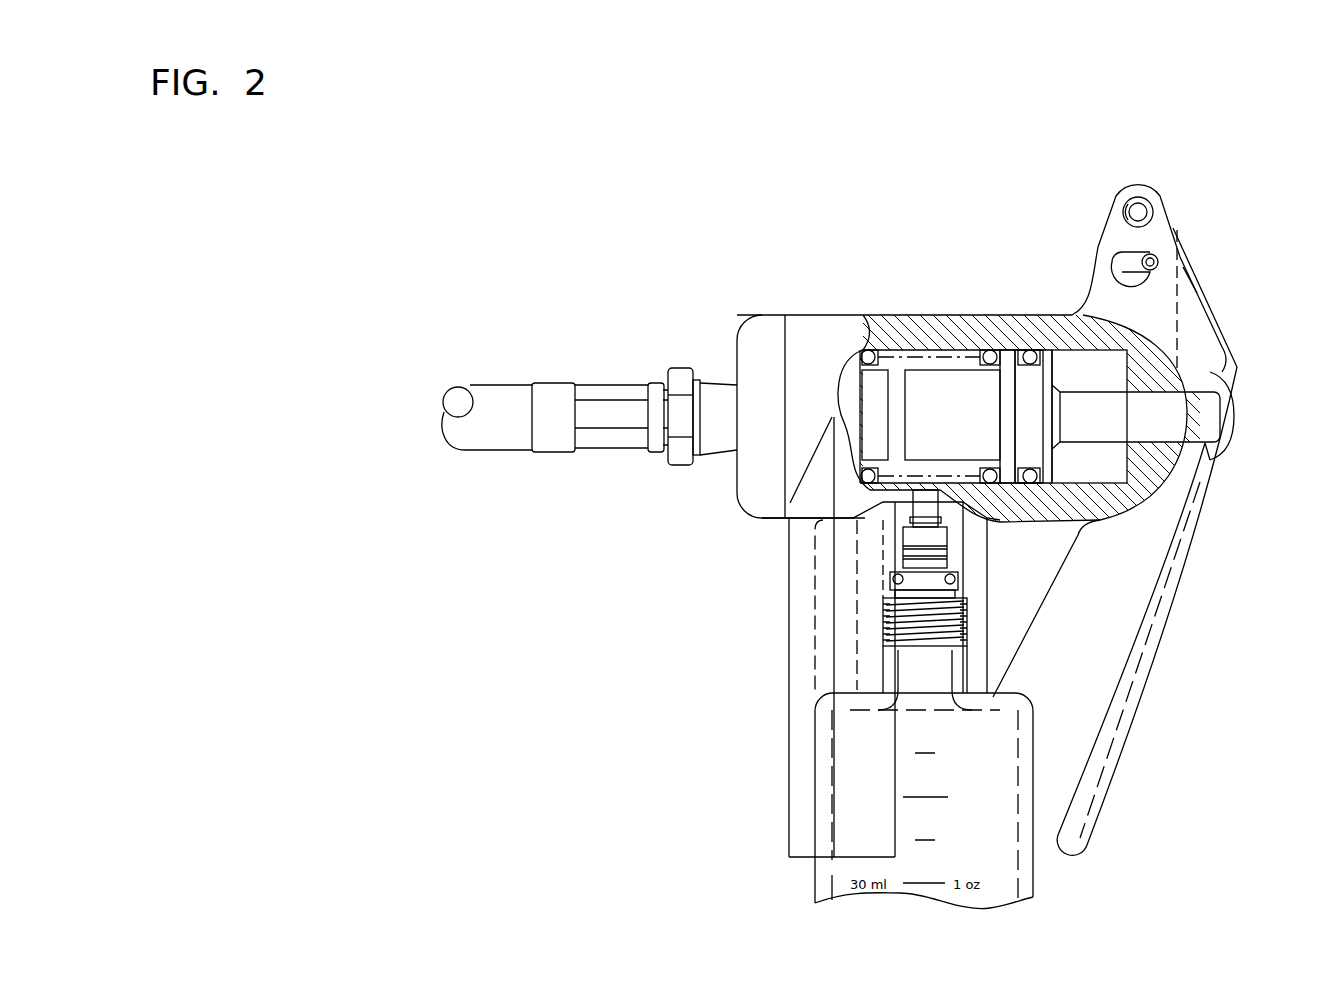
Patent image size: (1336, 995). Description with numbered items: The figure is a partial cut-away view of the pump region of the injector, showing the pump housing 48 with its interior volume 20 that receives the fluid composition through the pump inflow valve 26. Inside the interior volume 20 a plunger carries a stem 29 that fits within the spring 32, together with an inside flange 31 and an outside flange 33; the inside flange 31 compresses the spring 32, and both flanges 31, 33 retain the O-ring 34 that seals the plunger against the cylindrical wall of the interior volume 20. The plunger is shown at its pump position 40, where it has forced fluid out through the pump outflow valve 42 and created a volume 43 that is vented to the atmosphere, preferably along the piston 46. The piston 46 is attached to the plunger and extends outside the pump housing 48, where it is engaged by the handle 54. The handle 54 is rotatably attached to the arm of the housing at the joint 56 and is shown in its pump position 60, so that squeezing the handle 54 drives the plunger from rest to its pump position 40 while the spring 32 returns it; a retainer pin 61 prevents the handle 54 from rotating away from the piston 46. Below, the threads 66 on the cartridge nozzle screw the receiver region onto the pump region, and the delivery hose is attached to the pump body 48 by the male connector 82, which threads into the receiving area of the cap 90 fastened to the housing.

The interior volume 20 is at (962, 348).
The pump inflow valve 26 is at (926, 495).
The stem 29 is at (937, 367).
The inside flange 31 is at (1008, 360).
The spring 32 is at (990, 480).
The outside flange 33 is at (1043, 353).
The O-ring 34 is at (1030, 480).
The pump position 40 is at (917, 367).
The pump outflow valve 42 is at (870, 385).
The volume 43 is at (1108, 474).
The piston 46 is at (1200, 418).
The pump housing 48 is at (1158, 366).
The handle 54 is at (1180, 578).
The joint 56 is at (1145, 205).
The pump position 60 is at (1155, 632).
The retainer pin 61 is at (1158, 262).
The threads 66 is at (950, 627).
The male connector 82 is at (725, 398).
The cap 90 is at (762, 340).